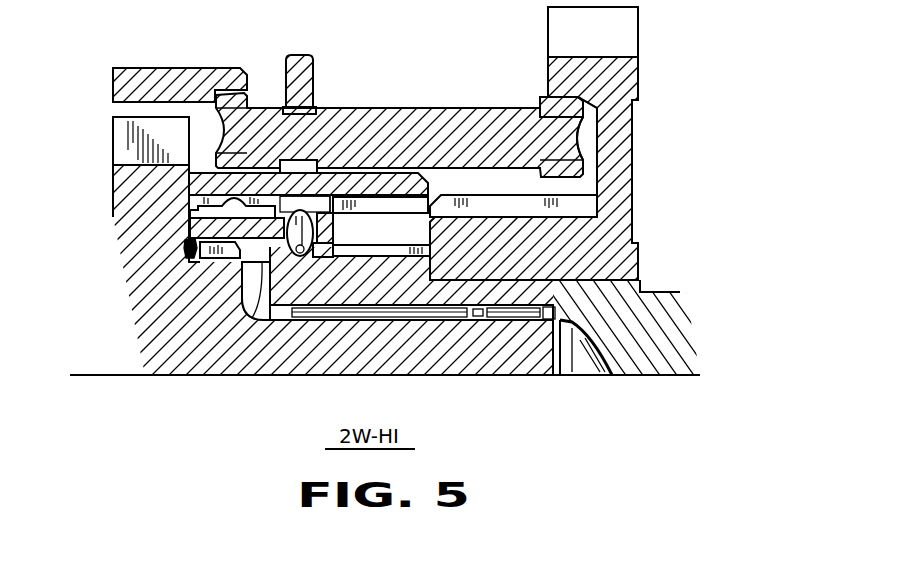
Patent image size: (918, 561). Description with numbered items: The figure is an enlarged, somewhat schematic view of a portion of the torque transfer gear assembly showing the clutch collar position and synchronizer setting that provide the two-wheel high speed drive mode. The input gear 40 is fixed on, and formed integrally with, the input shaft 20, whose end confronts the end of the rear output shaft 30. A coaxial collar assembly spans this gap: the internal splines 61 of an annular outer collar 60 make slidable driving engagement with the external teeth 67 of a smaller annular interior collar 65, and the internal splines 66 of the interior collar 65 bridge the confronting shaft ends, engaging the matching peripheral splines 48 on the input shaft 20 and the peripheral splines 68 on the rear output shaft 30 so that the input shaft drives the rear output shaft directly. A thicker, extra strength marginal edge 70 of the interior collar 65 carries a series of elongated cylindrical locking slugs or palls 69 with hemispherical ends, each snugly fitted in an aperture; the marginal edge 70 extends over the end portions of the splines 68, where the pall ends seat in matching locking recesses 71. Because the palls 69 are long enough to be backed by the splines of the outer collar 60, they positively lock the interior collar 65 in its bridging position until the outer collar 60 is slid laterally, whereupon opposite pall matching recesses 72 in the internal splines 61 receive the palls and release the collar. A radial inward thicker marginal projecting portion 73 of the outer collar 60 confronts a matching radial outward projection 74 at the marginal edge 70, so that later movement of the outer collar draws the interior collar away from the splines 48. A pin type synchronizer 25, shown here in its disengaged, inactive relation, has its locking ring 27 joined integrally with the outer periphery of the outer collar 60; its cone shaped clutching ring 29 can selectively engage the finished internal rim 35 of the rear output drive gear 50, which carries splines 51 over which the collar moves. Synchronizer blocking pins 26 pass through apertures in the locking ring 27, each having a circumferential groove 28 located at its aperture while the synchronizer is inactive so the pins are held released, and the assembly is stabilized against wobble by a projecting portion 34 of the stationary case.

The input shaft 20 is at (327, 364).
The pin type synchronizer 25 is at (403, 52).
The synchronizer blocking pins 26 is at (367, 118).
The locking ring 27 is at (307, 56).
The circumferential groove 28 is at (302, 102).
The cone shaped clutching ring 29 is at (550, 104).
The rear output shaft 30 is at (639, 363).
The projecting portion 34 is at (172, 76).
The finished internal rim 35 is at (578, 97).
The input gear 40 is at (123, 167).
The peripheral splines 48 is at (212, 258).
The rear output drive gear 50 is at (630, 78).
The splines 51 is at (587, 205).
The annular outer collar 60 is at (400, 178).
The internal splines 61 is at (386, 206).
The annular interior collar 65 is at (191, 251).
The internal splines 66 is at (241, 300).
The external teeth 67 is at (342, 193).
The peripheral splines 68 is at (415, 252).
The locking slugs 69 is at (316, 254).
The marginal edge 70 is at (360, 250).
The locking recesses 71 is at (297, 258).
The pall matching recesses 72 is at (188, 236).
The radial inward thicker marginal projecting portion 73 is at (190, 214).
The radial outward projection 74 is at (277, 212).